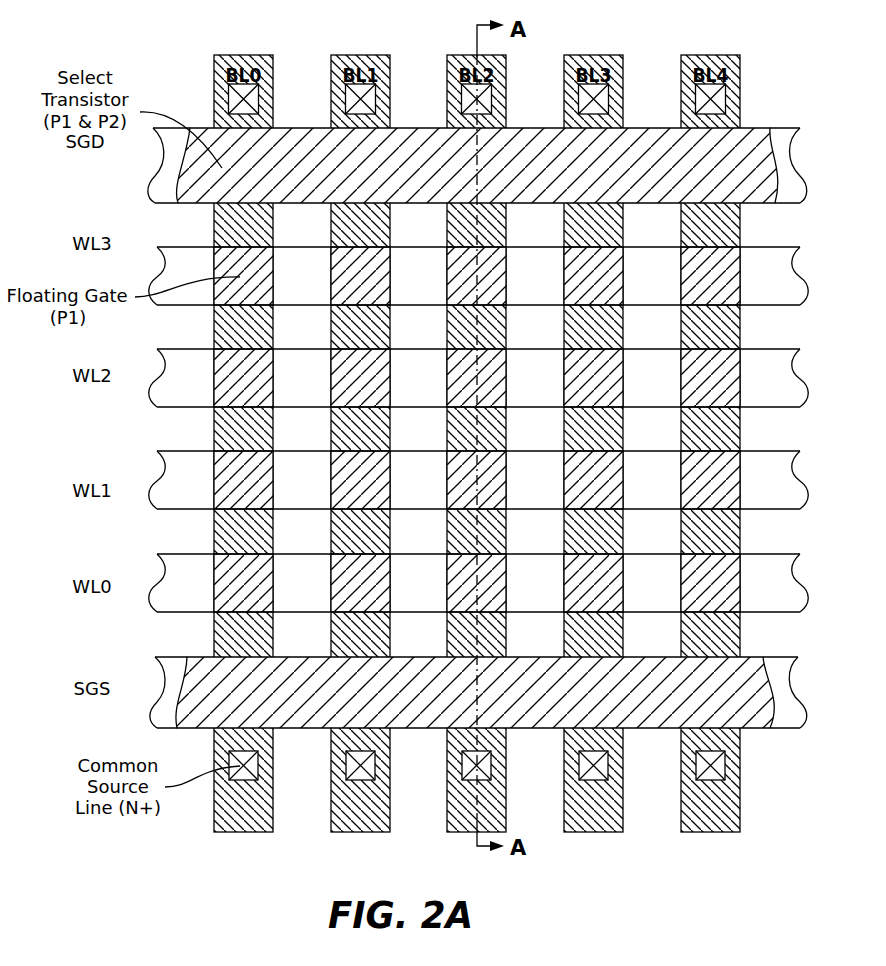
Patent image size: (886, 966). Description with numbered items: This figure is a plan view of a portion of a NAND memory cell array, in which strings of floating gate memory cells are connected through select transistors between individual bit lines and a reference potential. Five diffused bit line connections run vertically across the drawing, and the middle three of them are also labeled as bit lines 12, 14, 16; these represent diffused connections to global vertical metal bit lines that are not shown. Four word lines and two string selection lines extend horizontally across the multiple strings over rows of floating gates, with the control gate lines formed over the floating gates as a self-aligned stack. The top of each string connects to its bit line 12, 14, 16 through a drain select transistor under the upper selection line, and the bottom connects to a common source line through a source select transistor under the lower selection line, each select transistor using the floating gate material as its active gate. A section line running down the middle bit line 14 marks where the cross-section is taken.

The bit line BL1 12 is at (360, 55).
The bit line BL2 14 is at (467, 55).
The bit line BL3 16 is at (597, 55).